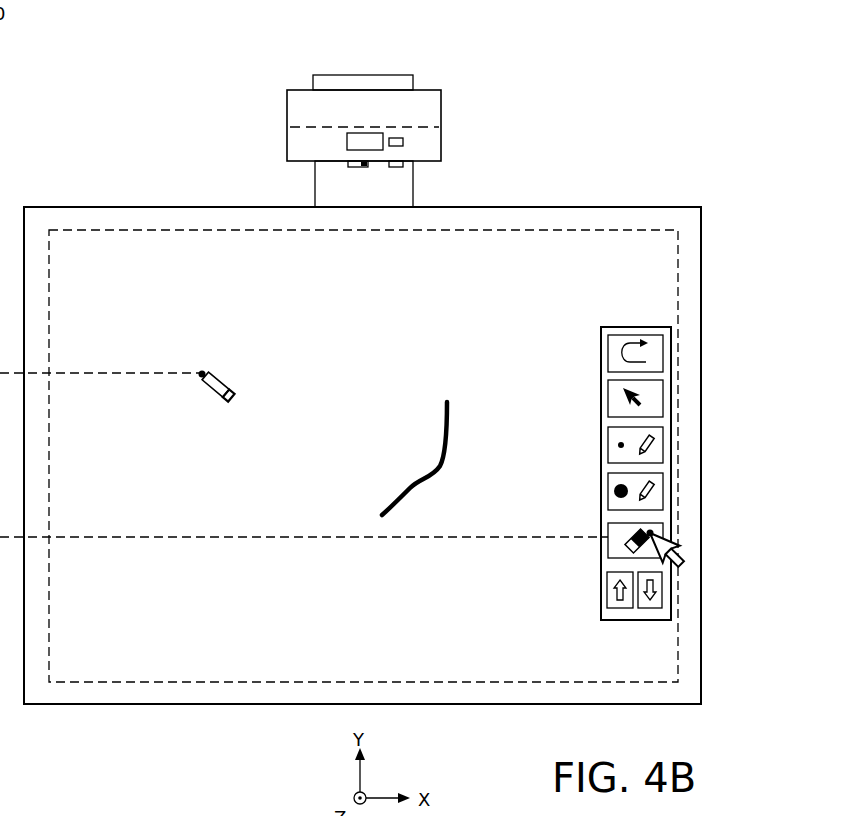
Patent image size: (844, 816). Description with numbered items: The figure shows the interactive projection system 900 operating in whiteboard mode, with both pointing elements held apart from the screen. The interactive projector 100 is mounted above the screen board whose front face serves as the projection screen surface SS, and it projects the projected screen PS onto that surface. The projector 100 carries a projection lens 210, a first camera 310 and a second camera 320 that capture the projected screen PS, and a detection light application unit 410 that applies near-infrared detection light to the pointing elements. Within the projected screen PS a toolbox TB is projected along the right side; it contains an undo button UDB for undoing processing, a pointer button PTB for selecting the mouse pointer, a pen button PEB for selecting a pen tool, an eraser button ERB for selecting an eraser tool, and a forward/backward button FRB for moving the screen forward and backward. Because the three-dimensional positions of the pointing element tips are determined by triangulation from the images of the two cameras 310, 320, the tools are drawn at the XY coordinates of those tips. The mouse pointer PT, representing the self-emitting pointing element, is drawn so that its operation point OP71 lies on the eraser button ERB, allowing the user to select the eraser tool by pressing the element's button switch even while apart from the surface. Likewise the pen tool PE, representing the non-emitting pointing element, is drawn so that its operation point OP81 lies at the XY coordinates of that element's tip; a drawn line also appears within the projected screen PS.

The interactive projection system 900 is at (677, 107).
The interactive projector 100 is at (441, 108).
The projection lens 210 is at (347, 143).
The first camera 310 is at (403, 141).
The second camera 320 is at (413, 163).
The detection light application unit 410 is at (348, 163).
The projection screen surface SS is at (90, 215).
The projected screen PS is at (172, 230).
The toolbox TB is at (616, 327).
The undo button UDB is at (608, 350).
The pointer button PTB is at (608, 395).
The pen button PEB is at (608, 440).
The eraser button ERB is at (608, 538).
The forward/backward button FRB is at (640, 584).
The pen tool PE is at (225, 383).
The mouse pointer PT is at (700, 572).
The operation point of the pen tool OP81 is at (202, 372).
The operation point of the mouse pointer OP71 is at (652, 531).